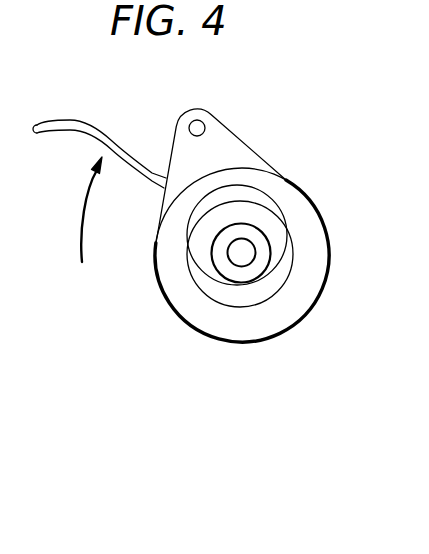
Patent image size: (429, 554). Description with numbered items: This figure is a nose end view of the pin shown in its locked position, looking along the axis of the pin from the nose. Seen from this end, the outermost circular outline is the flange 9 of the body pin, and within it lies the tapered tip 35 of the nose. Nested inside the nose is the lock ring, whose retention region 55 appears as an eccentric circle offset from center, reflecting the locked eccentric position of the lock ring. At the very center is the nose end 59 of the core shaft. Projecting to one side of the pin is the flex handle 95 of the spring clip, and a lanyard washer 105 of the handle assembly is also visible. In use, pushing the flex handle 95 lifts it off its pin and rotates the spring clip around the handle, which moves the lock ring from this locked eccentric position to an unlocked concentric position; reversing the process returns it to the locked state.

The flange 9 is at (318, 247).
The tapered tip 35 is at (283, 233).
The retention region 55 is at (252, 188).
The nose end 59 is at (232, 260).
The flex handle 95 is at (72, 121).
The lanyard washer 105 is at (220, 112).